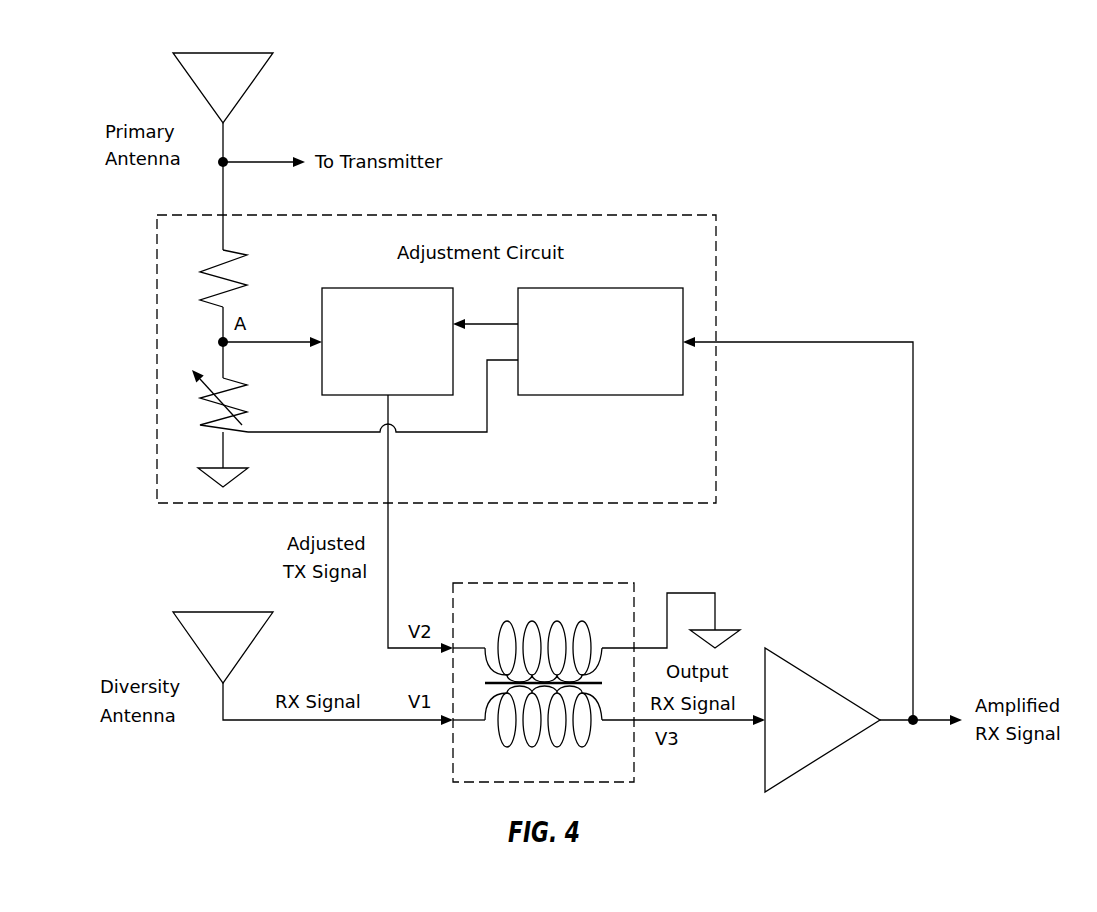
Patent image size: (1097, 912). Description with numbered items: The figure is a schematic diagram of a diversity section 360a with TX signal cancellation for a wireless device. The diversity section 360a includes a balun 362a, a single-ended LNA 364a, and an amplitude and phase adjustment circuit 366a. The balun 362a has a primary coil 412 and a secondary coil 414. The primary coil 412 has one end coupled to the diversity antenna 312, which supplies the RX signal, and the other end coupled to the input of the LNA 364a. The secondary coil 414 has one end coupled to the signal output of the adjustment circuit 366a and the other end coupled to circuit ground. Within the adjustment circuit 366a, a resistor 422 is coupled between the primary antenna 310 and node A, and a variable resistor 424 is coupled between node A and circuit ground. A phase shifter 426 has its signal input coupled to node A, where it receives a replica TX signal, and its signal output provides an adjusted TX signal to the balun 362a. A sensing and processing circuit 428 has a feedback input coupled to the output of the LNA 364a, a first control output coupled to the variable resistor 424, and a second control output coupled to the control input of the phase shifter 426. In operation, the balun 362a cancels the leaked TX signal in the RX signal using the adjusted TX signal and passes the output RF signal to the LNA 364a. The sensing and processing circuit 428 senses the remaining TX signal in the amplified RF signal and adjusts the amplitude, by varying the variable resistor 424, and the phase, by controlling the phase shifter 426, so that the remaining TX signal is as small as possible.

The primary antenna 310 is at (222, 53).
The diversity antenna 312 is at (218, 612).
The diversity section 360a is at (950, 200).
The balun 362a is at (537, 583).
The single-ended LNA 364a is at (826, 685).
The amplitude and phase adjustment circuit 366a is at (478, 215).
The primary coil 412 is at (497, 744).
The secondary coil 414 is at (497, 630).
The resistor 422 is at (217, 269).
The variable resistor 424 is at (242, 386).
The phase shifter 426 is at (360, 288).
The sensing and processing circuit 428 is at (631, 288).